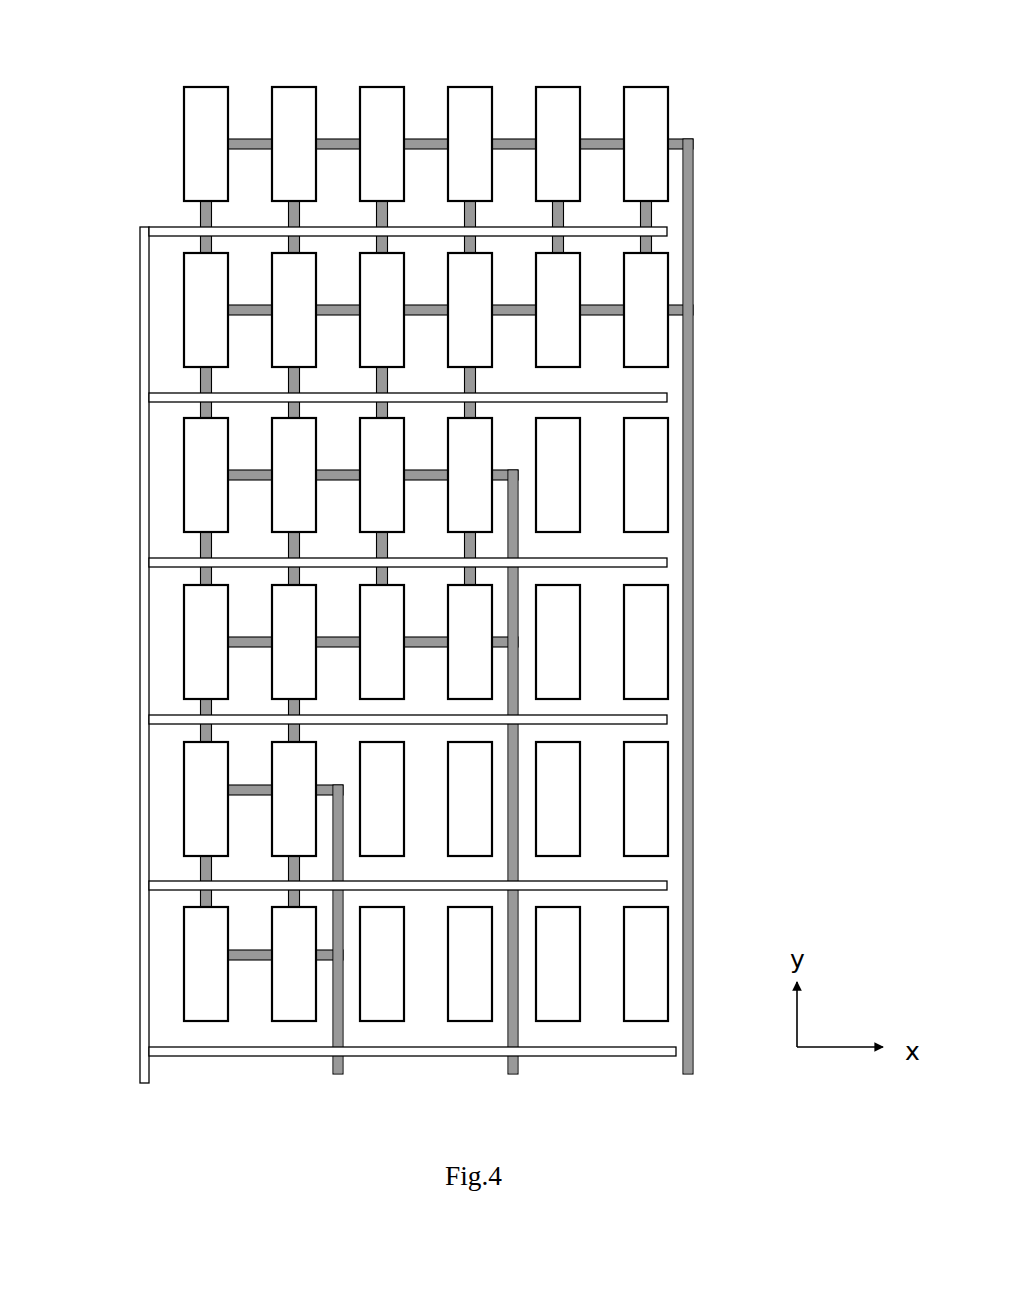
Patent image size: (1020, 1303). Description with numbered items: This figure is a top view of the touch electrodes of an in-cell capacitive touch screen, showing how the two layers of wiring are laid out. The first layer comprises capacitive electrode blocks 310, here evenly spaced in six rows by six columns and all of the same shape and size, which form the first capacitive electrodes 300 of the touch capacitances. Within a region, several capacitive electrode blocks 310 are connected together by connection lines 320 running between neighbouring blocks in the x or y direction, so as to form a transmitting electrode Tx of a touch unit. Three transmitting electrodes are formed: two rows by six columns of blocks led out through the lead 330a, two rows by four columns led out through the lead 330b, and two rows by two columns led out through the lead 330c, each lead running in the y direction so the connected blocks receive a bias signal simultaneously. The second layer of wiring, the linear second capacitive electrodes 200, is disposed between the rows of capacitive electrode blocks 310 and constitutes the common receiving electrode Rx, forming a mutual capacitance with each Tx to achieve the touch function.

The second capacitive electrodes 200 is at (139, 246).
The first capacitive electrodes 300 is at (190, 80).
The capacitive electrode block 310 is at (640, 104).
The connection line 320 is at (341, 139).
The lead 330a is at (693, 1074).
The lead 330b is at (518, 1074).
The lead 330c is at (343, 1073).